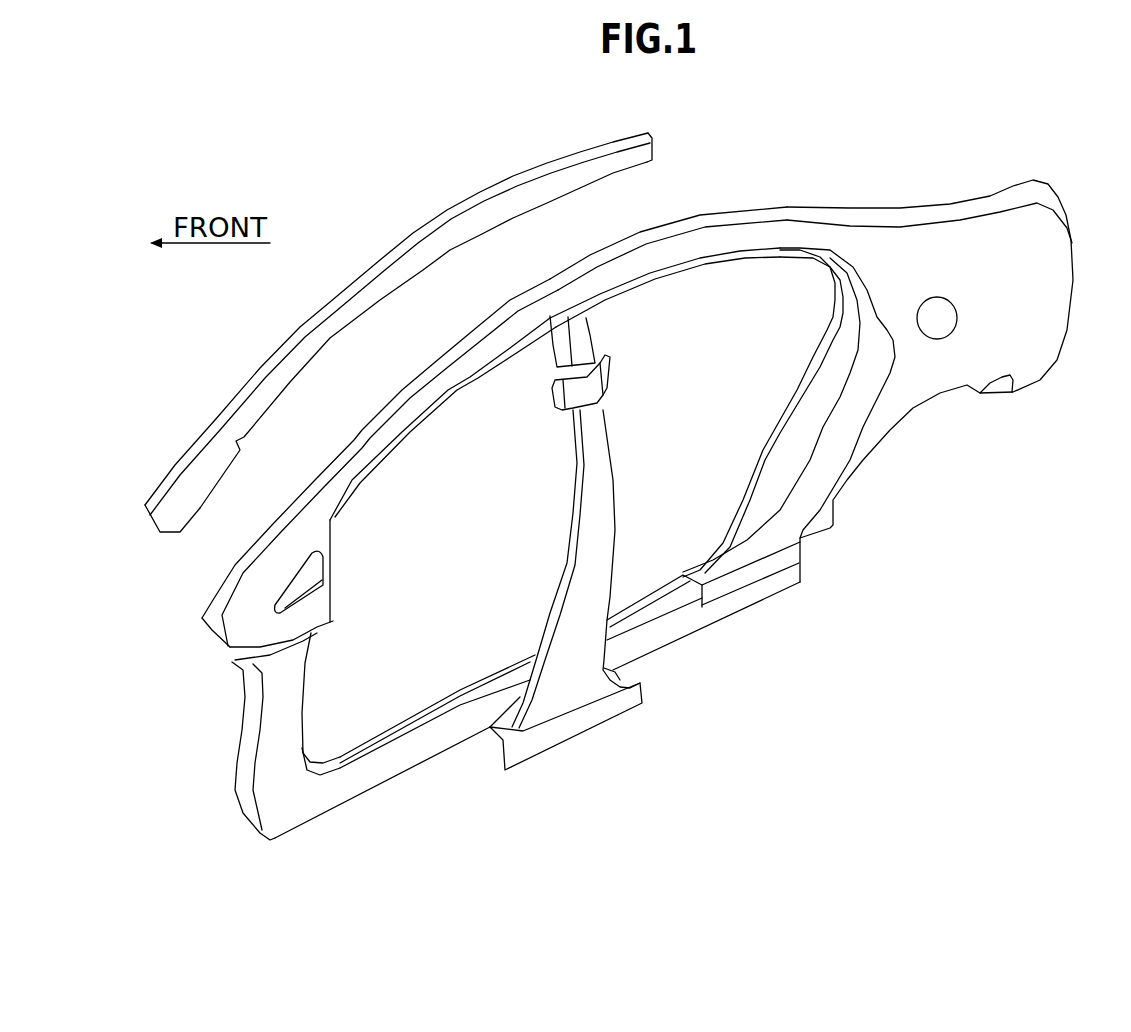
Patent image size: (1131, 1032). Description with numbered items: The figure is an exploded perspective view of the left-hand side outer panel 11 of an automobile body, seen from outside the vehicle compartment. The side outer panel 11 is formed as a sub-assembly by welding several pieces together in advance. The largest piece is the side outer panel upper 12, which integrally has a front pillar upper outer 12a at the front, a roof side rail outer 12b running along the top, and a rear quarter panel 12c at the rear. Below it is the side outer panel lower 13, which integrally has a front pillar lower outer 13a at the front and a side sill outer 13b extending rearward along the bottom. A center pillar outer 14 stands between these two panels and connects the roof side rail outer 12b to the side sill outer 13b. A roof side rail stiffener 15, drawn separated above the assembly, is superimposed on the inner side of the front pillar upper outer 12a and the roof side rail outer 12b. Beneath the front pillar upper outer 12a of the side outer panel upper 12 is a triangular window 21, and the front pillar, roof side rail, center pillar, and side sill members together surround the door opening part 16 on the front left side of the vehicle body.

The side outer panel 11 is at (827, 176).
The side outer panel upper 12 is at (712, 200).
The front pillar upper outer 12a is at (368, 469).
The roof side rail outer 12b is at (567, 293).
The rear quarter panel 12c is at (997, 240).
The side outer panel lower 13 is at (370, 797).
The front pillar lower outer 13a is at (268, 730).
The side sill outer 13b is at (412, 753).
The center pillar outer 14 is at (602, 558).
The roof side rail stiffener 15 is at (478, 207).
The door opening part 16 is at (483, 557).
The triangular window 21 is at (314, 565).